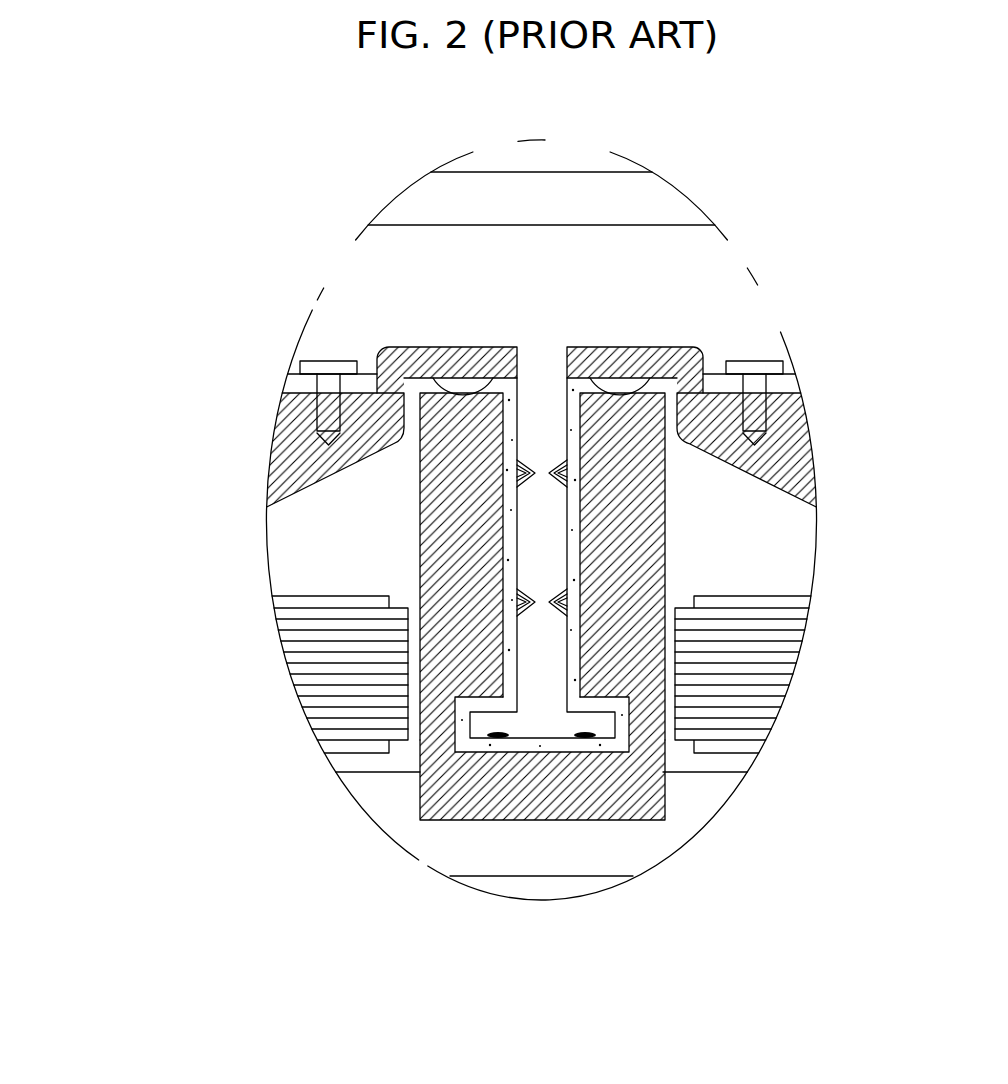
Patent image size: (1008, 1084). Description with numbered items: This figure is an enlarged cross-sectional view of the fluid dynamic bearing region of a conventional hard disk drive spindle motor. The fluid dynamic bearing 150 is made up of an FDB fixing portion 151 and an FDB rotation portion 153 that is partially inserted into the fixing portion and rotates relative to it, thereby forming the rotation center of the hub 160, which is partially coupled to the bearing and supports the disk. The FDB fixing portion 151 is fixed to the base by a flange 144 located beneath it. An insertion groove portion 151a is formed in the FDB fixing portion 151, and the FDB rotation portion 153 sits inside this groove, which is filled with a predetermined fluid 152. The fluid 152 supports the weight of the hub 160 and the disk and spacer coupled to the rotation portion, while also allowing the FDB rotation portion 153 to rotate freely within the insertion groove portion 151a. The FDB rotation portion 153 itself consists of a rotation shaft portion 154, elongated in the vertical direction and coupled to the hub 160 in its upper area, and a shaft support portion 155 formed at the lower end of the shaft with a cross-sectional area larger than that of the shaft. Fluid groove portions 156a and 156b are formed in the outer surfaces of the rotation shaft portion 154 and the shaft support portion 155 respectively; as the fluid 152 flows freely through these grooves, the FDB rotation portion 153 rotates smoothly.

The flange 144 is at (580, 855).
The fluid dynamic bearing 150 is at (93, 564).
The FDB fixing portion 151 is at (513, 807).
The insertion groove portion 151a is at (578, 573).
The fluid 152 is at (572, 509).
The FDB rotation portion 153 is at (157, 750).
The rotation shaft portion 154 is at (540, 400).
The shaft support portion 155 is at (485, 718).
The fluid groove portion 156a is at (518, 463).
The fluid groove portion 156b is at (500, 737).
The hub 160 is at (778, 463).